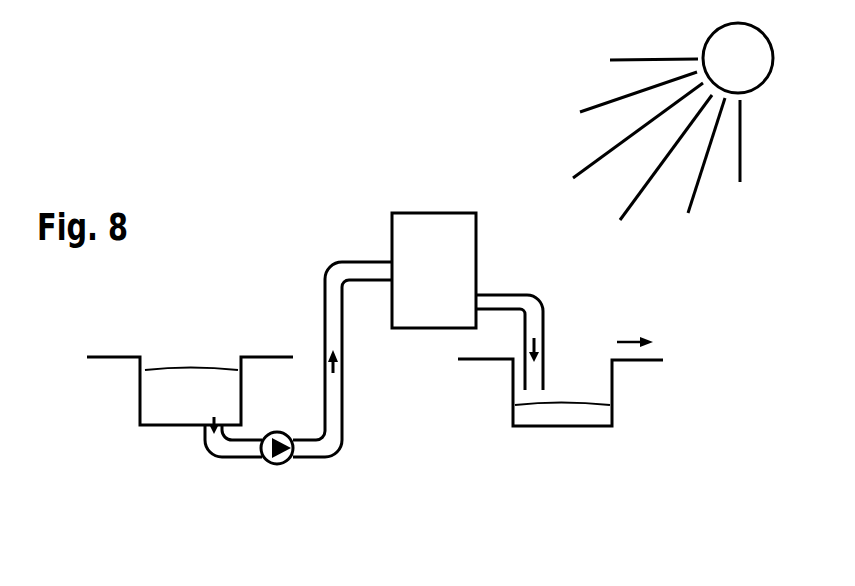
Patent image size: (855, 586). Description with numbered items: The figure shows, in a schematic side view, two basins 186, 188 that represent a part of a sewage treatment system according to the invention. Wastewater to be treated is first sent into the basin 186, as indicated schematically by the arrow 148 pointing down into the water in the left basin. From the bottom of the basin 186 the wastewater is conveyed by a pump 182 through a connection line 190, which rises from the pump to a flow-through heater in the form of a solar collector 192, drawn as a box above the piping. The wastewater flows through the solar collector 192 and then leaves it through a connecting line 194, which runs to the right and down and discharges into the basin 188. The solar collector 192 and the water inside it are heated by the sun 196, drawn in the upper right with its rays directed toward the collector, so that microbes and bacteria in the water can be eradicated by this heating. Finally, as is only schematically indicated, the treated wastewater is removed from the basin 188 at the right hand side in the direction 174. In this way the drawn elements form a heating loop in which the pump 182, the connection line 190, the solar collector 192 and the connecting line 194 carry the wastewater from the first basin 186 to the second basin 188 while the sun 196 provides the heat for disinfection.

The arrow 148 is at (170, 352).
The basin 186 is at (140, 400).
The pump 182 is at (288, 462).
The connection line 190 is at (343, 383).
The solar collector 192 is at (455, 276).
The connecting line 194 is at (507, 293).
The direction 174 is at (588, 375).
The basin 188 is at (615, 382).
The sun 196 is at (758, 68).